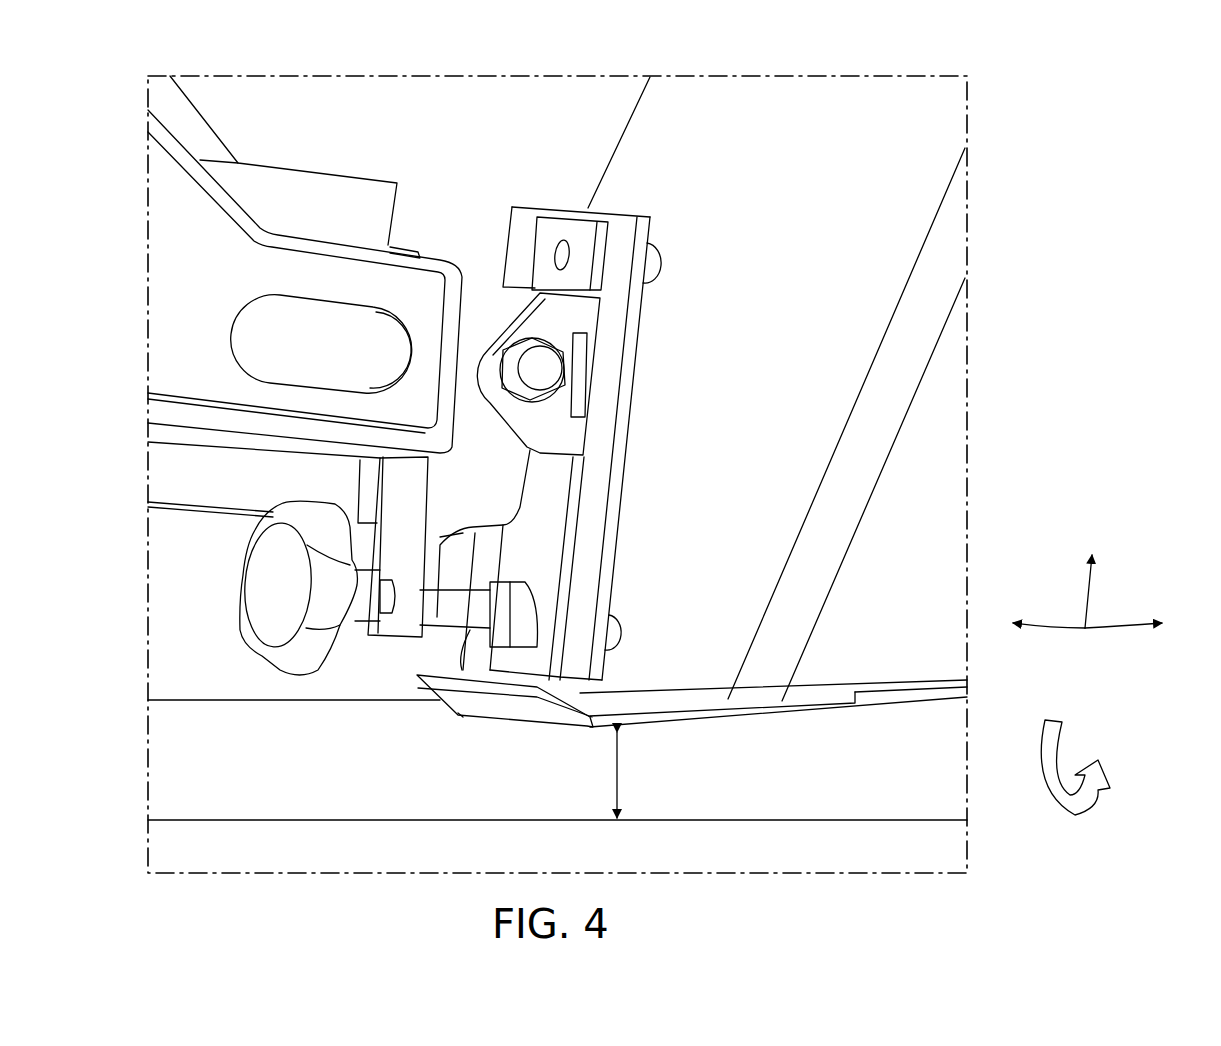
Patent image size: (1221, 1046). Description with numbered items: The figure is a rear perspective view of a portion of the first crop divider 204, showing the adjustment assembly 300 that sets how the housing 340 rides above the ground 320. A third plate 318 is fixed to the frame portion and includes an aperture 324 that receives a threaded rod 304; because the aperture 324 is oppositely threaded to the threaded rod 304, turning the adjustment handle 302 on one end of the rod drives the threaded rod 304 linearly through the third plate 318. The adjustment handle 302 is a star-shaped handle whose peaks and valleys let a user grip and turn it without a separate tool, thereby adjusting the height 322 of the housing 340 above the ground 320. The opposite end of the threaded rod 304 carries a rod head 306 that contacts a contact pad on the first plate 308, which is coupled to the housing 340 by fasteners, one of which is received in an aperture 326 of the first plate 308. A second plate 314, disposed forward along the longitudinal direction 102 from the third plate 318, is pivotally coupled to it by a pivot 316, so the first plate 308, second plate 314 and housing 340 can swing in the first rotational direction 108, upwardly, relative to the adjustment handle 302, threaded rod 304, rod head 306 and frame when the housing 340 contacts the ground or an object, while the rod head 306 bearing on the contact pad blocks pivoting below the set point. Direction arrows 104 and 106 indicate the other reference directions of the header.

The longitudinal direction 102 is at (1118, 632).
The second axis direction arrow 104 is at (1090, 598).
The third axis direction arrow 106 is at (1063, 622).
The first rotational direction 108 is at (1095, 803).
The first crop divider 204 is at (1050, 130).
The adjustment assembly 300 is at (782, 288).
The adjustment handle 302 is at (300, 677).
The threaded rod 304 is at (443, 607).
The rod head 306 is at (483, 633).
The first plate 308 is at (573, 225).
The second plate 314 is at (587, 313).
The pivot 316 is at (567, 373).
The third plate 318 is at (480, 285).
The ground 320 is at (808, 820).
The height 322 is at (621, 771).
The aperture 324 is at (378, 637).
The aperture 326 is at (562, 240).
The housing 340 is at (625, 215).